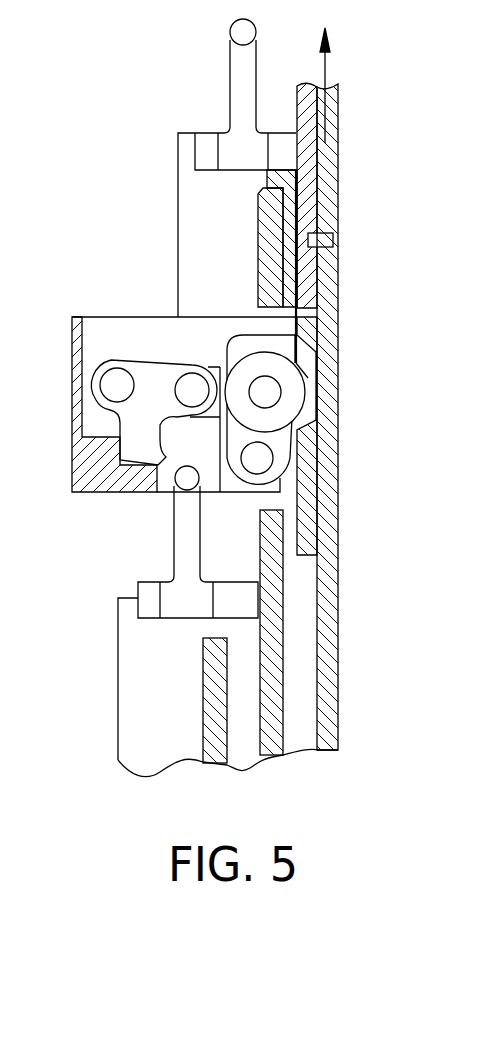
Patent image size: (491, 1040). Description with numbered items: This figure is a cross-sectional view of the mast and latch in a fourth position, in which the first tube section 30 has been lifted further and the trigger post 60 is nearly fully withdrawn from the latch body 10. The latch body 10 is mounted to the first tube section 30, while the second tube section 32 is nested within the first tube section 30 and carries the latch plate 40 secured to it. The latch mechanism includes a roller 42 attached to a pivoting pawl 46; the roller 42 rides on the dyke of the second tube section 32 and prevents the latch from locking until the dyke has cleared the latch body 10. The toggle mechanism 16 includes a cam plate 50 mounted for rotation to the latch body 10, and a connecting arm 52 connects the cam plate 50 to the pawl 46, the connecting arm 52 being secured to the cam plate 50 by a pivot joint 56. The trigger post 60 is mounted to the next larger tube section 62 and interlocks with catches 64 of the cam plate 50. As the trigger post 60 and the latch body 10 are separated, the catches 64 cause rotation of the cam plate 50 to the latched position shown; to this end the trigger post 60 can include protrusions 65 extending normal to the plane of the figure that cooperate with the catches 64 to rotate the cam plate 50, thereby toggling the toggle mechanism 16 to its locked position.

The latch body 10 is at (83, 462).
The toggle mechanism 16 is at (128, 350).
The first tube section 30 is at (270, 757).
The second tube section 32 is at (322, 218).
The latch plate 40 is at (312, 502).
The roller 42 is at (290, 373).
The pawl 46 is at (280, 457).
The cam plate 50 is at (102, 407).
The connecting arm 52 is at (222, 350).
The pivot joint 56 is at (189, 383).
The trigger post 60 is at (178, 503).
The next larger tube section 62 is at (212, 757).
The catches 64 is at (143, 447).
The protrusions 65 is at (180, 482).